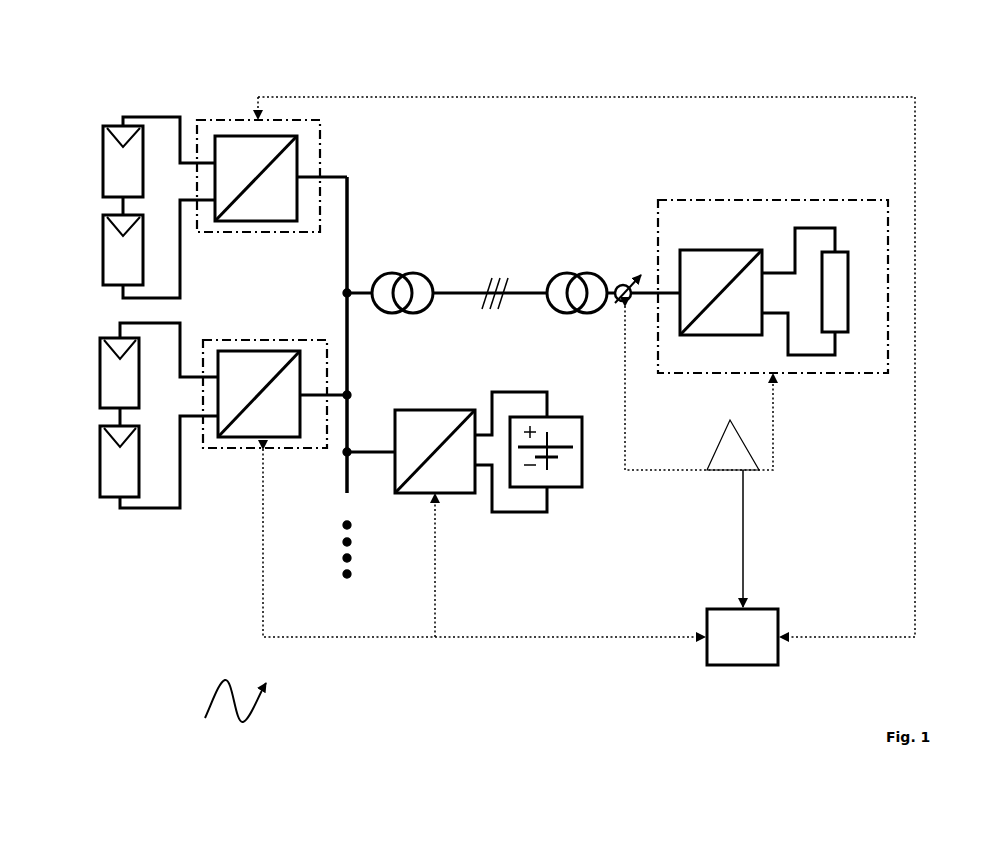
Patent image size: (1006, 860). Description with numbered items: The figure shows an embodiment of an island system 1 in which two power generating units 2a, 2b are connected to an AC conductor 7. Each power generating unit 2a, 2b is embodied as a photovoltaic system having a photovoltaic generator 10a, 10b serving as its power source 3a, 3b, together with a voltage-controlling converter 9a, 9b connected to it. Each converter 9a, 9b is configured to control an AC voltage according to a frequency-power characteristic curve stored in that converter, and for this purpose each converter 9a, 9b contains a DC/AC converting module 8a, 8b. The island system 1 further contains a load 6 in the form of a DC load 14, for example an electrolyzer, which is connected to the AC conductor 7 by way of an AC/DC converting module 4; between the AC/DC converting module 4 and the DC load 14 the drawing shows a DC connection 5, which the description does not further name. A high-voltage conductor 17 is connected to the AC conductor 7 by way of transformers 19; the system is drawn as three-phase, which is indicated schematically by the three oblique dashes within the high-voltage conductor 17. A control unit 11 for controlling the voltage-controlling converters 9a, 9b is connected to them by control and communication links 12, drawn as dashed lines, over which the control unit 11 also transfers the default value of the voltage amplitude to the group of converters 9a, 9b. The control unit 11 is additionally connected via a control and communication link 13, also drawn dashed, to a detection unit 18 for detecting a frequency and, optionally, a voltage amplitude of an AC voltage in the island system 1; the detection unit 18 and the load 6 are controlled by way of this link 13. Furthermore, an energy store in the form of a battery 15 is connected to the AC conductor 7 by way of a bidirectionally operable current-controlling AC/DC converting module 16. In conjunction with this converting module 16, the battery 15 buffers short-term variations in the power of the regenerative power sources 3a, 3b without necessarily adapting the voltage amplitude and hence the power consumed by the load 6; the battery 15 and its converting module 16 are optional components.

The island system 1 is at (230, 715).
The power generating unit 2a is at (207, 100).
The power generating unit 2b is at (189, 540).
The power source 3a is at (92, 118).
The power source 3b is at (87, 335).
The AC/DC converting module 4 is at (718, 250).
The DC intermediate circuit 5 is at (807, 228).
The load 6 is at (768, 192).
The AC conductor 7 is at (349, 235).
The DC/AC converting module 8a is at (253, 222).
The DC/AC converting module 8b is at (253, 350).
The voltage-controlling converter 9a is at (258, 232).
The voltage-controlling converter 9b is at (266, 339).
The photovoltaic generator 10a is at (123, 161).
The photovoltaic generator 10b is at (119, 373).
The control unit 11 is at (742, 637).
The control and communication links 12 is at (432, 548).
The control and communication link 13 is at (699, 456).
The DC load 14 is at (850, 267).
The battery 15 is at (584, 441).
The bidirectional AC/DC converting module 16 is at (437, 410).
The high-voltage conductor 17 is at (473, 291).
The detection unit 18 is at (624, 284).
The transformers 19 is at (420, 272).